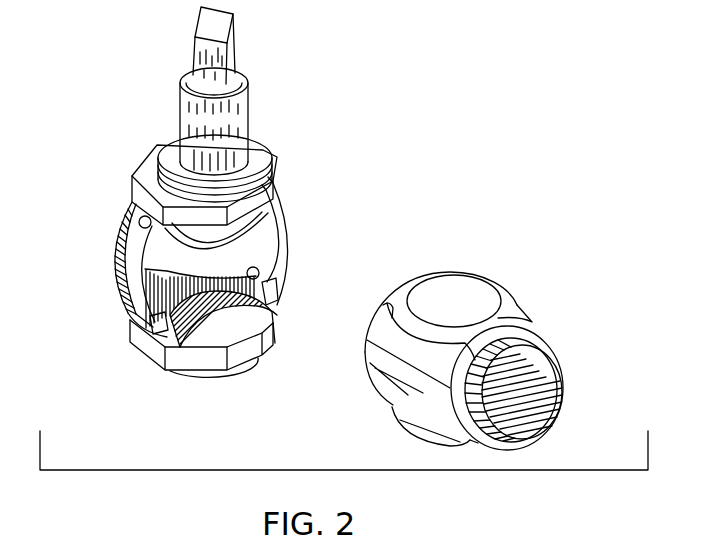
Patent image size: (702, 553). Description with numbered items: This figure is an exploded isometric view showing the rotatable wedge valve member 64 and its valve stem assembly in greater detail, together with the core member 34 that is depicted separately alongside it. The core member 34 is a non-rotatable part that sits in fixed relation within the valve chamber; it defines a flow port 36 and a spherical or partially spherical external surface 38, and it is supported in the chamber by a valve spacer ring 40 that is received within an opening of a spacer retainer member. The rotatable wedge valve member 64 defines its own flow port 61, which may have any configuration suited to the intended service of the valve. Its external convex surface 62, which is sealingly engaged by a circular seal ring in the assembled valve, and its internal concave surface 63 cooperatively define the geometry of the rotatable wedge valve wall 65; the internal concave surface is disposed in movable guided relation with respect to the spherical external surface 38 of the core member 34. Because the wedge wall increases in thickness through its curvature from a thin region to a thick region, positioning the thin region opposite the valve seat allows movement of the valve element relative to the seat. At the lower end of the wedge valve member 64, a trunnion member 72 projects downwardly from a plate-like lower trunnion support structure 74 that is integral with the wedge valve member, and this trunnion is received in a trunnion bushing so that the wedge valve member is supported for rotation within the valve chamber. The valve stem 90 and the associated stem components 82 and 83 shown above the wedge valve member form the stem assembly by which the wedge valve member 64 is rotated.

The core member 34 is at (465, 272).
The flow port 36 is at (540, 398).
The spherical external surface 38 is at (498, 318).
The valve spacer ring 40 is at (540, 345).
The flow port 61 is at (233, 238).
The external convex surface 62 is at (125, 258).
The internal concave surface 63 is at (155, 314).
The rotatable wedge valve member 64 is at (330, 80).
The rotatable wedge valve wall 65 is at (292, 211).
The trunnion member 72 is at (241, 366).
The trunnion support structure 74 is at (235, 328).
The bonnet sleeve 82 is at (180, 107).
The threaded collar 83 is at (258, 146).
The valve stem 90 is at (198, 21).